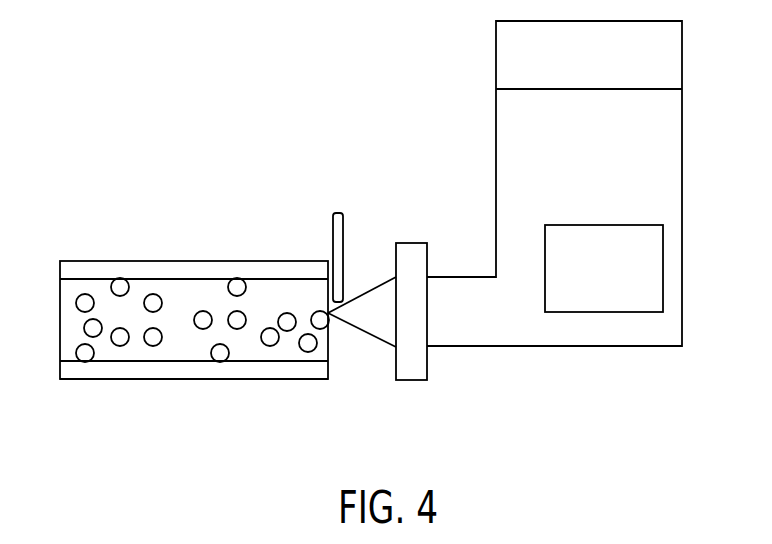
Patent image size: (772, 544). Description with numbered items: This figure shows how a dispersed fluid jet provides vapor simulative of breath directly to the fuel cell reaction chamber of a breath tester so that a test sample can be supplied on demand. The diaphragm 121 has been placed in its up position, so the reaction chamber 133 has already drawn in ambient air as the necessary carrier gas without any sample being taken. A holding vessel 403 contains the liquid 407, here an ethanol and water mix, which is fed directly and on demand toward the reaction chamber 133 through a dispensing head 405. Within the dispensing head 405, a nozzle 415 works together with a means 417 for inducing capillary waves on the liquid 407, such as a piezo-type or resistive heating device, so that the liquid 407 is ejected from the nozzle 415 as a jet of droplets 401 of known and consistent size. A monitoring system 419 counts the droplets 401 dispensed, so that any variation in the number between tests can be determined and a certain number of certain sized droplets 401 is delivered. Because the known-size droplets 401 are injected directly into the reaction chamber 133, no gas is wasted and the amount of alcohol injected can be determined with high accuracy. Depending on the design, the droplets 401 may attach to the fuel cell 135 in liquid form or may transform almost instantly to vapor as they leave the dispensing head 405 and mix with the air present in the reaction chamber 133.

The diaphragm 121 is at (181, 252).
The reaction chamber 133 is at (178, 335).
The fuel cell 135 is at (297, 388).
The droplets 401 is at (77, 352).
The holding vessel 403 is at (615, 347).
The dispensing head 405 is at (370, 288).
The liquid 407 is at (672, 158).
The nozzle 415 is at (370, 338).
The means for inducing capillary waves 417 is at (412, 242).
The monitoring system 419 is at (338, 212).